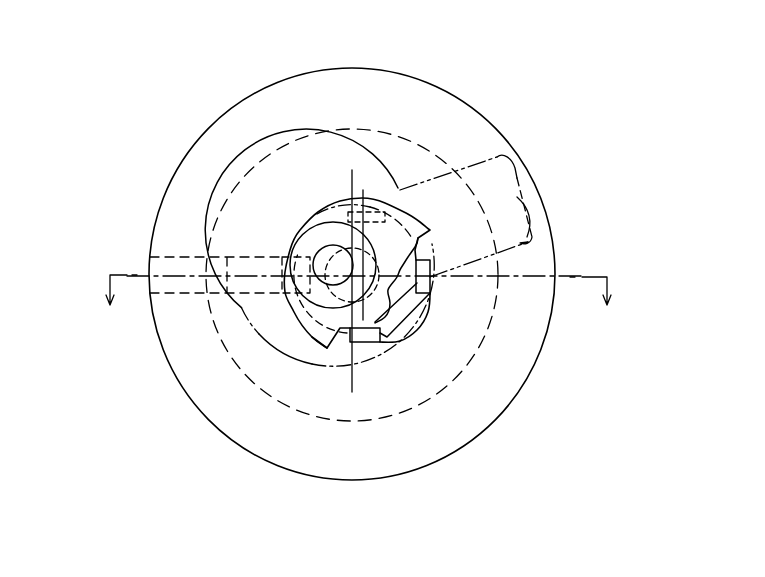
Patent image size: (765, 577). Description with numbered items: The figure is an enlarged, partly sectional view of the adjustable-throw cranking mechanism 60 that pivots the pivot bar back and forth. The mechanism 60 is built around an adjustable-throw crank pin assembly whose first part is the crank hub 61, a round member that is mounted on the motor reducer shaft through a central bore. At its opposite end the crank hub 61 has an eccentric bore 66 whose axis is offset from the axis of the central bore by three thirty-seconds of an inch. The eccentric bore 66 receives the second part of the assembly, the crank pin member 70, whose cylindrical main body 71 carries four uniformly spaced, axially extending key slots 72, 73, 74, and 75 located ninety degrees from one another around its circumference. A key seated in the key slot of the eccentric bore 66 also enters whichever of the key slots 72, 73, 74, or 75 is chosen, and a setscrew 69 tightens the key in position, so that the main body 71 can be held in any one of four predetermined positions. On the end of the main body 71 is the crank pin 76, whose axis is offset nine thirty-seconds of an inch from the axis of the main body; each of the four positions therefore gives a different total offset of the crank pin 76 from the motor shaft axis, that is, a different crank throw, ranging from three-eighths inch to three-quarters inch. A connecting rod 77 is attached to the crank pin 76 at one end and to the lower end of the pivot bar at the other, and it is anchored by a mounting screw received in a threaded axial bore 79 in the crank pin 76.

The adjustable-throw cranking mechanism 60 is at (463, 77).
The crank hub 61 is at (190, 145).
The eccentric bore 66 is at (398, 274).
The setscrew 69 is at (222, 333).
The crank pin member 70 is at (318, 343).
The cylindrical main body 71 is at (410, 323).
The key slot 72 is at (312, 322).
The key slot 73 is at (380, 210).
The key slot 74 is at (424, 283).
The key slot 75 is at (363, 342).
The crank pin 76 is at (320, 228).
The connecting rod 77 is at (533, 157).
The threaded axial bore 79 is at (322, 252).